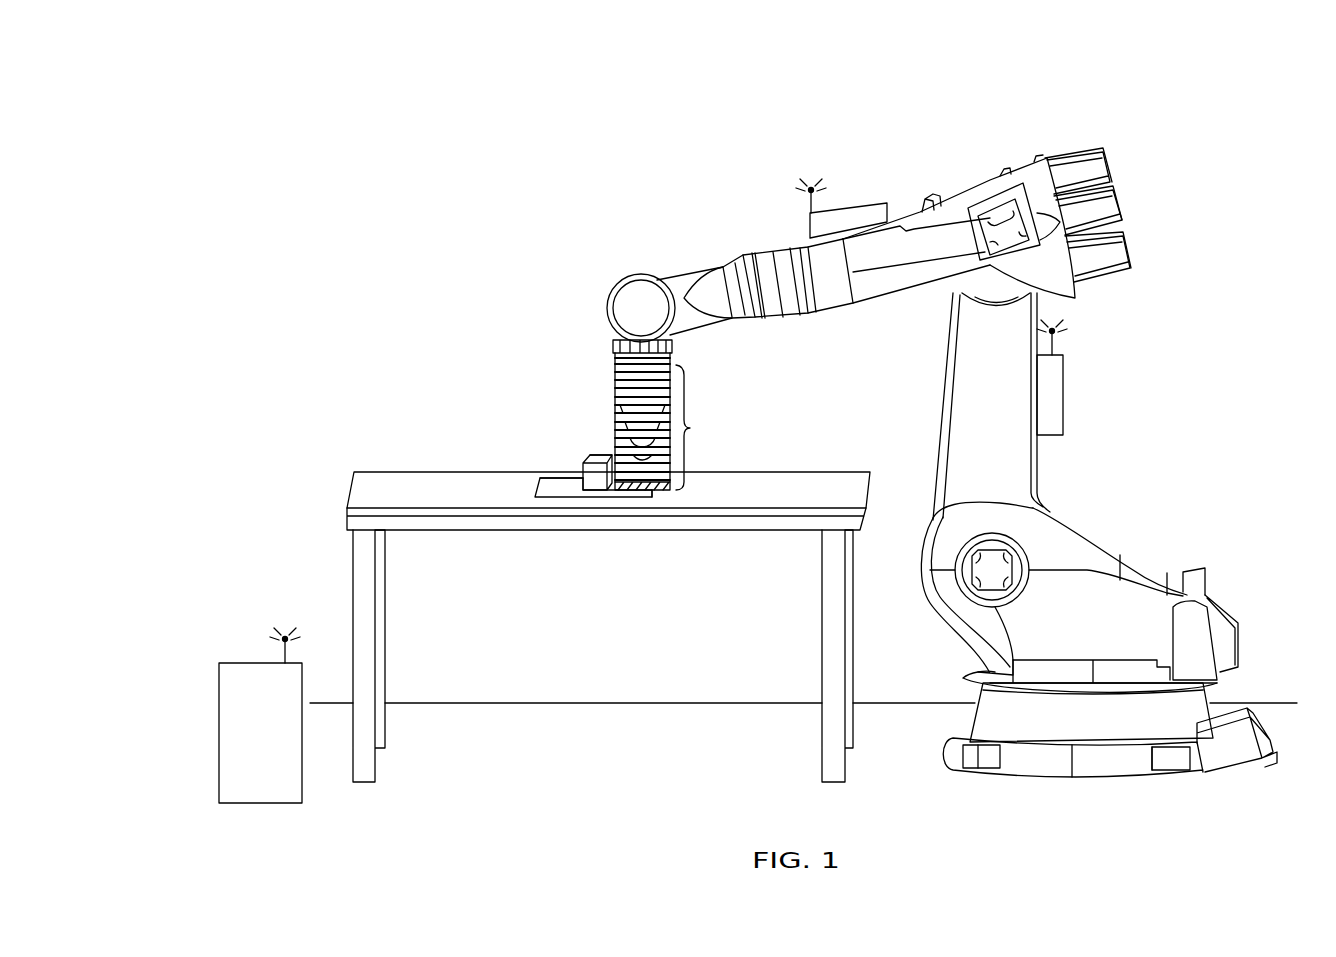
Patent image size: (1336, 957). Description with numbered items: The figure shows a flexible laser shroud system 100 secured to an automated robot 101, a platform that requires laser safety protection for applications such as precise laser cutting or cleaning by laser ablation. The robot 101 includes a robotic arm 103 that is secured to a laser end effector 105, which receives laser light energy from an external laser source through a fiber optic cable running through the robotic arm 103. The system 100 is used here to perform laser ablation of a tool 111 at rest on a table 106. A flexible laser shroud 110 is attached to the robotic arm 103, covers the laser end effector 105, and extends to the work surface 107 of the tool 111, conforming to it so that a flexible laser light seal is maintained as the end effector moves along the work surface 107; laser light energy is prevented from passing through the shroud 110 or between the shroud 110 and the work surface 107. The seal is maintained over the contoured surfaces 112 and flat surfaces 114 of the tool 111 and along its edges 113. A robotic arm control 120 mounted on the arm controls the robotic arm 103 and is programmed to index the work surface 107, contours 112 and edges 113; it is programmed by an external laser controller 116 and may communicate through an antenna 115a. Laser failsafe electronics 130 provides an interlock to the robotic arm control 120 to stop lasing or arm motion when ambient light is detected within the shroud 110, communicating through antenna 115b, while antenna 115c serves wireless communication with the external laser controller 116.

The flexible laser shroud system 100 is at (1050, 110).
The automated robot 101 is at (903, 462).
The robotic arm 103 is at (607, 314).
The laser end effector 105 is at (615, 385).
The table 106 is at (396, 471).
The work surface 107 is at (622, 500).
The flexible laser shroud 110 is at (637, 415).
The tool 111 is at (583, 460).
The contoured surfaces 112 is at (607, 455).
The edges 113 is at (652, 494).
The flat surfaces 114 is at (548, 484).
The antenna 115a is at (810, 180).
The antenna 115b is at (1068, 338).
The antenna 115c is at (285, 630).
The external laser controller 116 is at (219, 731).
The robotic arm control 120 is at (876, 204).
The laser failsafe electronics 130 is at (1065, 404).